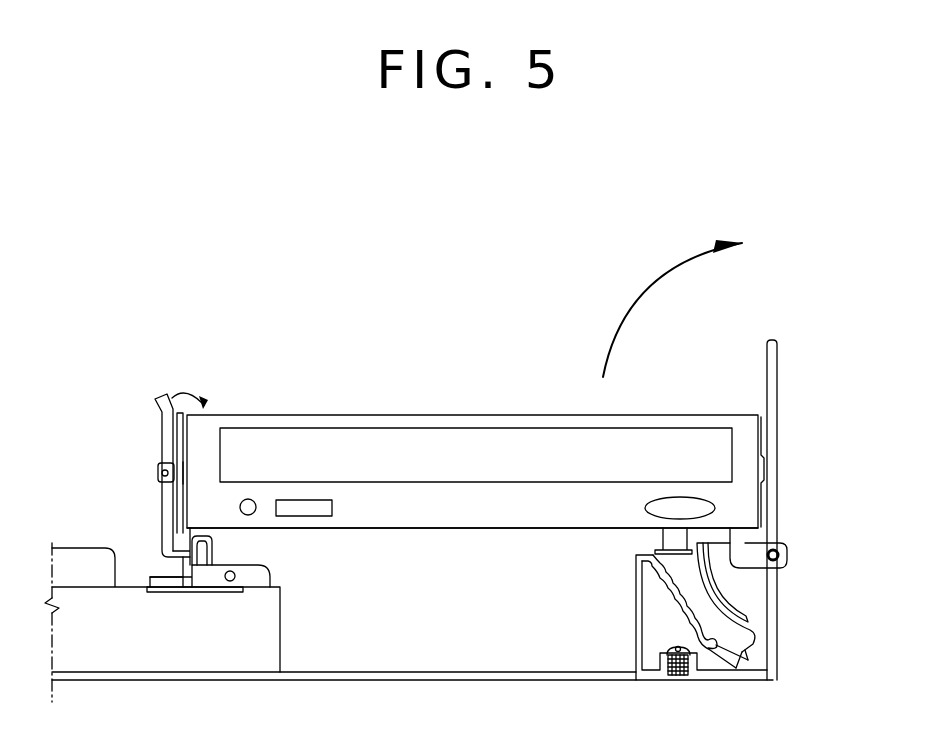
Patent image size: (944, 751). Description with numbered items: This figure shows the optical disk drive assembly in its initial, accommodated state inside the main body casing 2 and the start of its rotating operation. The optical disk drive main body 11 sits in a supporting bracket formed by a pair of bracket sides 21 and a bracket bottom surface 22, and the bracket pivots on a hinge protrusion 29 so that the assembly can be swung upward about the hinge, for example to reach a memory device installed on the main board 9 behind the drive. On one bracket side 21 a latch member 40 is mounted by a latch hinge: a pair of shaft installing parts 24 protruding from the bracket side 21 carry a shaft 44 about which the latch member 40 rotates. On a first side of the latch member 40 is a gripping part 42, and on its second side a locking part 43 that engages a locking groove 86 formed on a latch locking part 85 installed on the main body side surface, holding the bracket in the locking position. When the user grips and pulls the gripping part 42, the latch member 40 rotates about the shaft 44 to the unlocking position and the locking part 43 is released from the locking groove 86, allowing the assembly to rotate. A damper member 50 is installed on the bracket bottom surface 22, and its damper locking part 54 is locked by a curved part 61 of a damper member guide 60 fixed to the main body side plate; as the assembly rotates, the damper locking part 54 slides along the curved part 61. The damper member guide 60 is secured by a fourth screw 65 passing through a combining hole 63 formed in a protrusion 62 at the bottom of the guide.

The main body casing 2 is at (777, 640).
The main board 9 is at (408, 681).
The optical disk drive main body 11 is at (500, 416).
The bracket side 21 is at (182, 440).
The bracket bottom surface 22 is at (433, 532).
The shaft installing part 24 is at (178, 470).
The hinge protrusion 29 is at (789, 554).
The latch member 40 is at (219, 450).
The gripping part 42 is at (203, 400).
The locking part 43 is at (178, 547).
The shaft 44 is at (157, 472).
The damper member 50 is at (713, 597).
The damper locking part 54 is at (745, 653).
The damper member guide 60 is at (640, 598).
The curved part 61 is at (672, 638).
The protrusion 62 is at (689, 676).
The combining hole 63 is at (668, 672).
The fourth screw 65 is at (678, 678).
The latch locking part 85 is at (200, 550).
The locking groove 86 is at (200, 550).